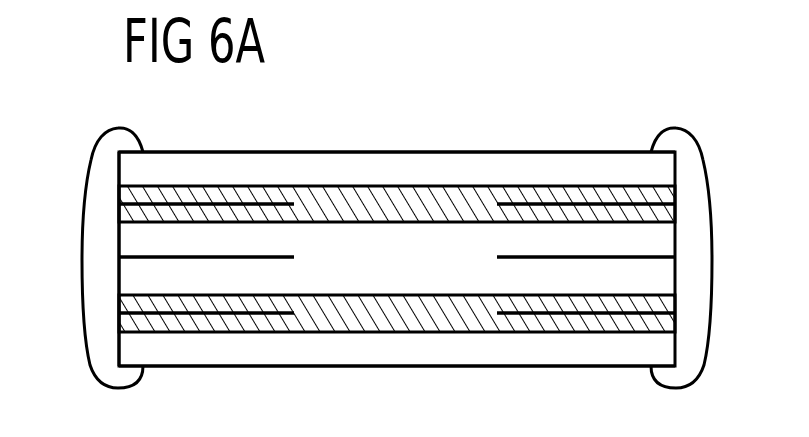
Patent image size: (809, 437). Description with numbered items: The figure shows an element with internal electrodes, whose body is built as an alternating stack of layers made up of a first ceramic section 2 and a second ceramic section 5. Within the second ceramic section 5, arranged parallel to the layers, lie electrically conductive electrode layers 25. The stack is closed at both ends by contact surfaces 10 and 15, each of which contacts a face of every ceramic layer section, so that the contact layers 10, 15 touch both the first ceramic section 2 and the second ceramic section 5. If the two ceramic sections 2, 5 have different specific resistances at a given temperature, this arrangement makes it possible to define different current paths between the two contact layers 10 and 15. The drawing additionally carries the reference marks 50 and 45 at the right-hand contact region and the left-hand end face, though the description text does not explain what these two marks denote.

The contact surface 10 is at (700, 325).
The second ceramic section 5 is at (297, 165).
The first ceramic section 2 is at (438, 200).
The electrode layer 25 is at (216, 202).
The contact surface 15 is at (86, 200).
The external contact layer 50 is at (680, 244).
The end face / contact interface 45 is at (117, 283).